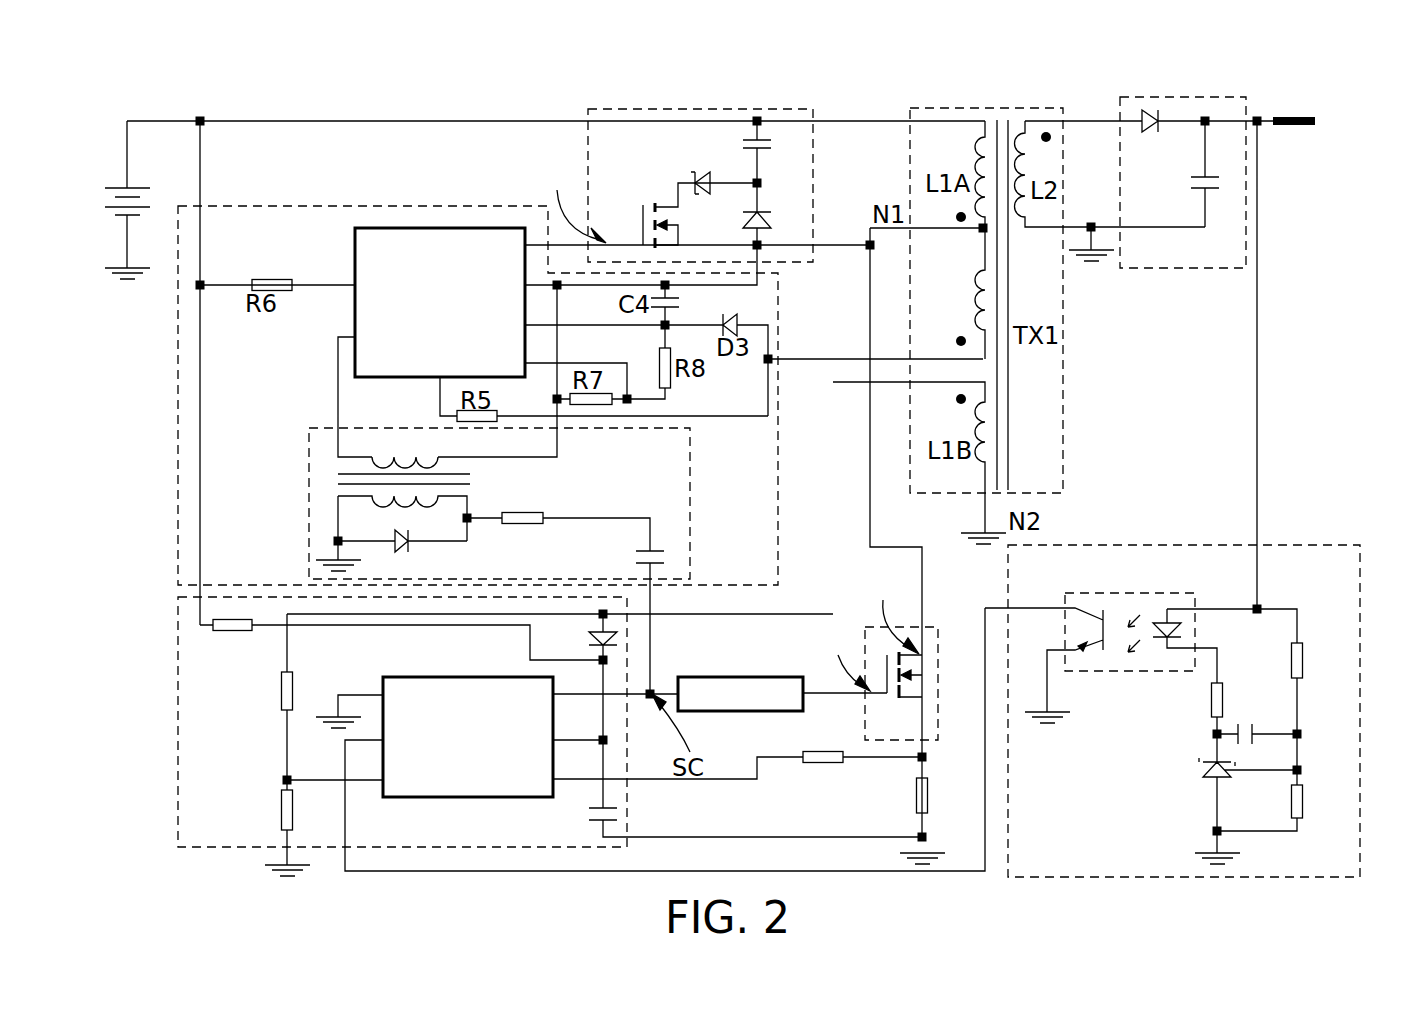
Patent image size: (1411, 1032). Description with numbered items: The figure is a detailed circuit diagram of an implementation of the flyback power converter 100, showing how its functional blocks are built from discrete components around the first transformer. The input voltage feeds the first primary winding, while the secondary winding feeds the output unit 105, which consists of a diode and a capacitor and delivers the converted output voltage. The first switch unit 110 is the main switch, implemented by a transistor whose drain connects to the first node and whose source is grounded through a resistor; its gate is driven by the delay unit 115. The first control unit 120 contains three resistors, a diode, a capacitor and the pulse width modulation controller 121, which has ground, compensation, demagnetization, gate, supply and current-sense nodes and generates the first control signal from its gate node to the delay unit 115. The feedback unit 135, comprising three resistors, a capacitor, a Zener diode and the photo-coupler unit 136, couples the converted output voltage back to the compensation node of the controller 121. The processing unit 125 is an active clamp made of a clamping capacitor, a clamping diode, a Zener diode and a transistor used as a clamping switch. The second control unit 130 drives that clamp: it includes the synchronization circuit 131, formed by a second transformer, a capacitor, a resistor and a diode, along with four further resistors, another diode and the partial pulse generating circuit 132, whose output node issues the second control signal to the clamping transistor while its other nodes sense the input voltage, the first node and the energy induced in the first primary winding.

The power converter 100 is at (215, 85).
The output unit 105 is at (1170, 270).
The first switch unit 110 is at (935, 627).
The delay unit 115 is at (738, 676).
The first control unit 120 is at (178, 688).
The pulse width modulation (PWM) controller 121 is at (445, 676).
The processing unit 125 is at (588, 143).
The second control unit 130 is at (178, 378).
The synchronization circuit 131 is at (309, 460).
The partial pulse generating circuit 132 is at (355, 237).
The feedback unit 135 is at (1275, 551).
The photo-coupler unit 136 is at (1140, 590).